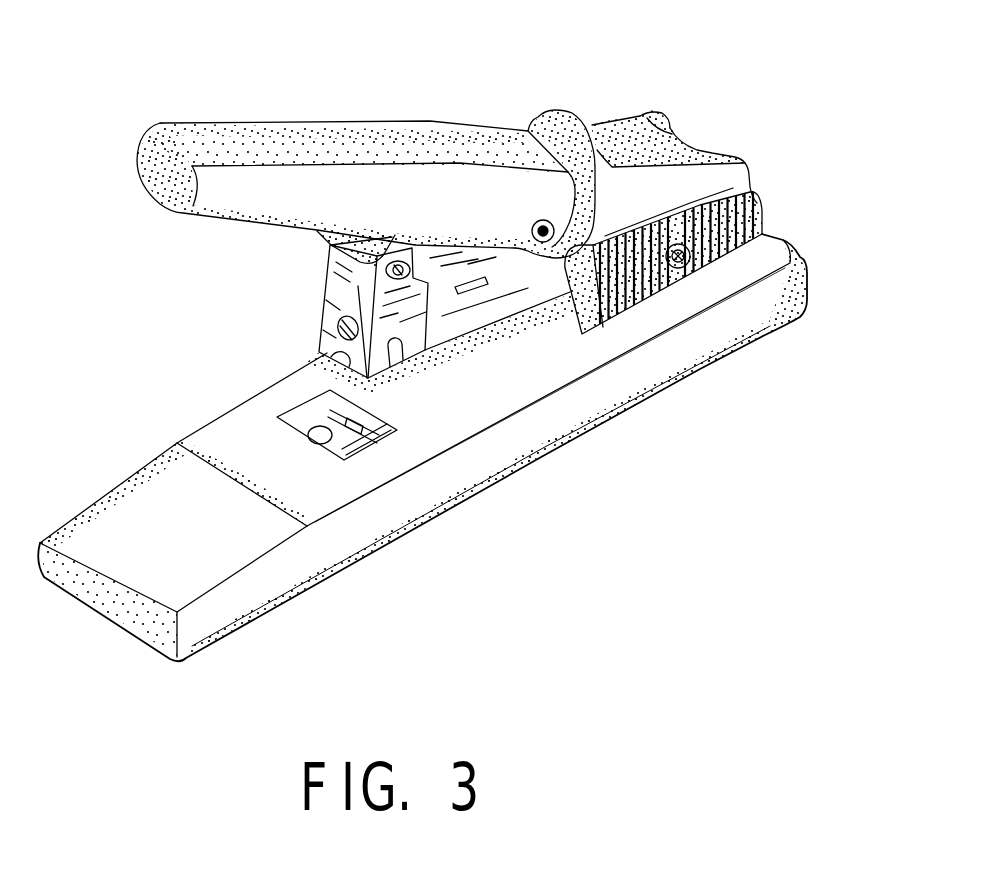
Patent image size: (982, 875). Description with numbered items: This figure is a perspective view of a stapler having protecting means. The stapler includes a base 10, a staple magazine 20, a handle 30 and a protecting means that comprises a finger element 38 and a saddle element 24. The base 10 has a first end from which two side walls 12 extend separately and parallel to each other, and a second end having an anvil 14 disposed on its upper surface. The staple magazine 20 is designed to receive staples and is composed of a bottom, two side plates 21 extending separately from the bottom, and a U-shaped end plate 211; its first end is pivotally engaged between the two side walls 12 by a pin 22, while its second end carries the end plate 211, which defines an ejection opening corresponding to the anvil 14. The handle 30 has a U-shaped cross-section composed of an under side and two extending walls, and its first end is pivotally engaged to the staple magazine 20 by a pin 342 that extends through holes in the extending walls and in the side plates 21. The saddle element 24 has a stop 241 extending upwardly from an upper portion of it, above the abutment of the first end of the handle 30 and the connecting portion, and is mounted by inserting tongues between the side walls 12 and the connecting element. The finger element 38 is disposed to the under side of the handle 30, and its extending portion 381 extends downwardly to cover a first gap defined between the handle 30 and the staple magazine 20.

The base 10 is at (547, 427).
The side walls 12 is at (706, 304).
The anvil 14 is at (353, 452).
The staple magazine 20 is at (313, 343).
The side plates 21 is at (513, 278).
The U-shaped end plate 211 is at (393, 366).
The pin 22 is at (680, 268).
The saddle element 24 is at (706, 113).
The stop 241 is at (700, 79).
The handle 30 is at (397, 157).
The pin 342 is at (547, 222).
The finger element 38 is at (275, 259).
The extending portion 381 is at (331, 247).